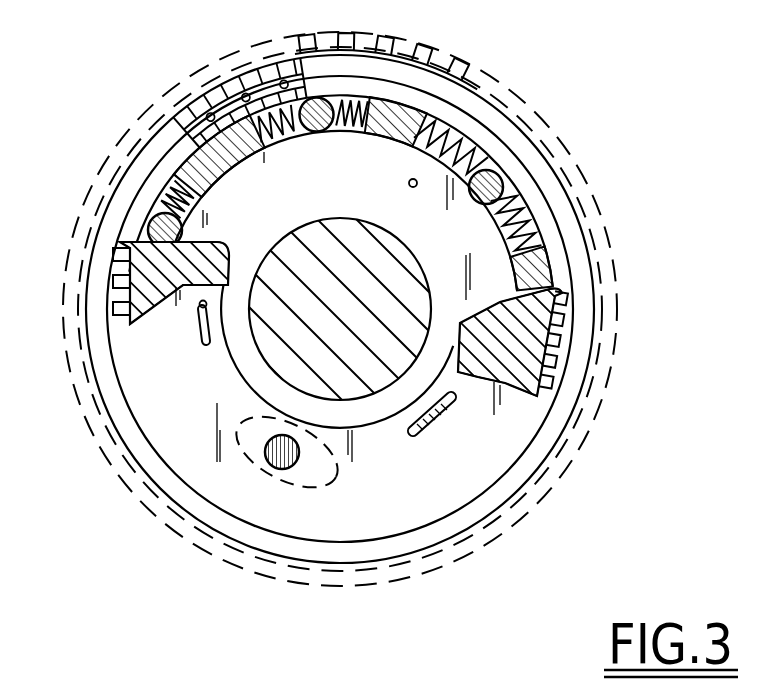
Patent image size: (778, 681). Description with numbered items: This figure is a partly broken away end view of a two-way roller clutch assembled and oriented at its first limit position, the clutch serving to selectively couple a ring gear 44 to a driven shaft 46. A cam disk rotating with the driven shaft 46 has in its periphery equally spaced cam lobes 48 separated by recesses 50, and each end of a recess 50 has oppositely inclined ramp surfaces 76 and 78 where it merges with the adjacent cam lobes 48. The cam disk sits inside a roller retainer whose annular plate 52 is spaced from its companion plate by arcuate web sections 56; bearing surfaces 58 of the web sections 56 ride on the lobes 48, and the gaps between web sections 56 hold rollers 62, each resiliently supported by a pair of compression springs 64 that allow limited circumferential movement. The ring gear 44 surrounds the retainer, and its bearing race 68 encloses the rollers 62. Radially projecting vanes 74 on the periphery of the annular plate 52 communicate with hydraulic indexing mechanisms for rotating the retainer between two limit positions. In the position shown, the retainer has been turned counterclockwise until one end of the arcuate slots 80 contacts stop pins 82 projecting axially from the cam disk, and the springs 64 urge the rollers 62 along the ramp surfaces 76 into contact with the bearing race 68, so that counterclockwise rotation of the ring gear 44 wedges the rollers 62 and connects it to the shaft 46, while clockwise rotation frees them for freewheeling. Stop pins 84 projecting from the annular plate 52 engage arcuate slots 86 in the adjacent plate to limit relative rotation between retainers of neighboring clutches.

The ring gear 44 is at (428, 46).
The driven shaft 46 is at (358, 328).
The cam lobes 48 is at (247, 158).
The recesses 50 is at (347, 138).
The annular plate 52 is at (411, 496).
The arcuate web sections 56 is at (187, 163).
The bearing surfaces 58 is at (217, 188).
The rollers 62 is at (322, 98).
The compression springs 64 is at (525, 200).
The bearing race 68 is at (484, 155).
The radially projecting vanes 74 is at (567, 303).
The ramp surface 76 is at (287, 143).
The ramp surface 78 is at (371, 146).
The arcuate slots 80 is at (197, 333).
The stop pins 82 is at (414, 431).
The stop pins 84 is at (280, 469).
The arcuate slots 86 is at (337, 480).